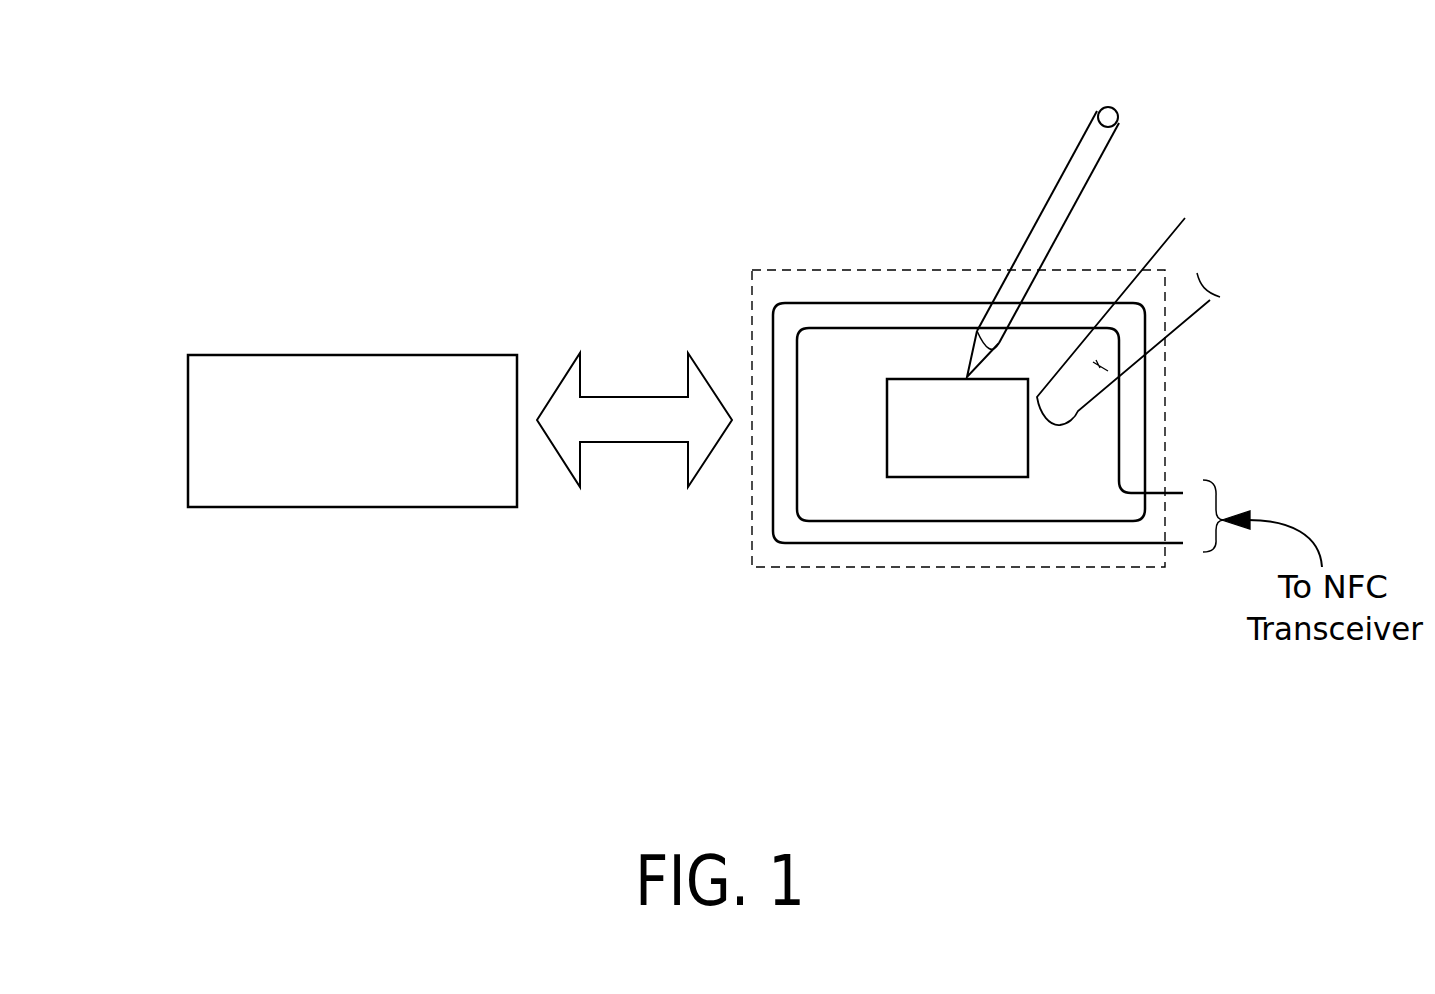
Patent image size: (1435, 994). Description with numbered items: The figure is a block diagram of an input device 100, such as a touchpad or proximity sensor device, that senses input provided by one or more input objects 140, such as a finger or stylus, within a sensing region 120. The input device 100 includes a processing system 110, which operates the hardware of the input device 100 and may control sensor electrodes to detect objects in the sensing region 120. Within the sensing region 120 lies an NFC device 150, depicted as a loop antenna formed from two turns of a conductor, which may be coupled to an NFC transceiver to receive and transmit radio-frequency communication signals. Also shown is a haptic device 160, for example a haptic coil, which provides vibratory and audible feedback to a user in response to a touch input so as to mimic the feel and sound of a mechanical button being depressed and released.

The input device 100 is at (240, 127).
The processing system 110 is at (188, 399).
The sensing region 120 is at (1165, 442).
The input objects 140 is at (1142, 147).
The NFC device 150 is at (1050, 545).
The haptic device 160 is at (910, 477).